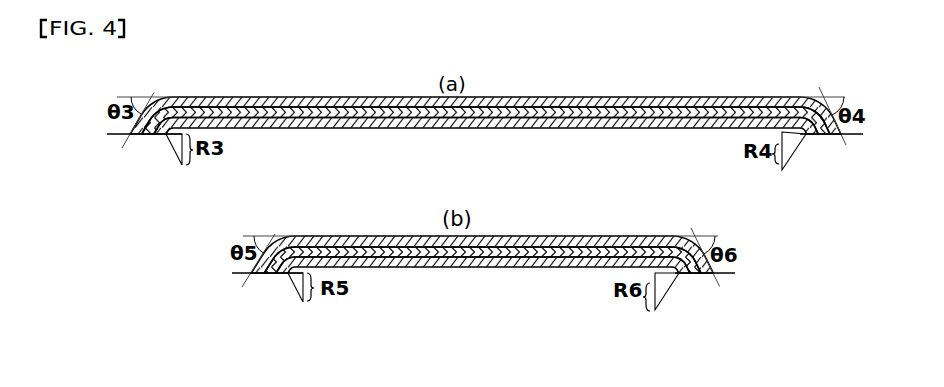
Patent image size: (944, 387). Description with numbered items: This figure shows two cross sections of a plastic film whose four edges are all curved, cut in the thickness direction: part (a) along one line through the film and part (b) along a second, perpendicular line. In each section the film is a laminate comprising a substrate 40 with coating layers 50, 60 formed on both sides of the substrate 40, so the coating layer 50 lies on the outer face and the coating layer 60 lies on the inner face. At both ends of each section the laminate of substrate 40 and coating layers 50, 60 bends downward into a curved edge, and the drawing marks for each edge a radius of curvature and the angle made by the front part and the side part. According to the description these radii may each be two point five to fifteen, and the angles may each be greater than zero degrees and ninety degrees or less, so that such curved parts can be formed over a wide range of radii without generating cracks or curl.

The substrate 40 is at (821, 136).
The coating layer 50 is at (835, 136).
The coating layer 60 is at (806, 136).